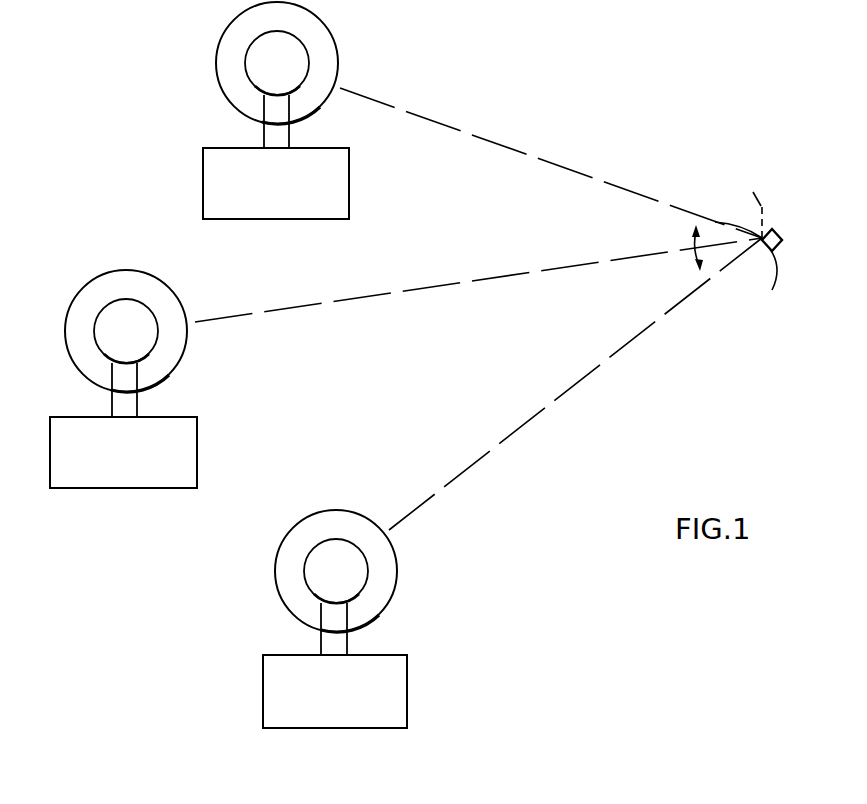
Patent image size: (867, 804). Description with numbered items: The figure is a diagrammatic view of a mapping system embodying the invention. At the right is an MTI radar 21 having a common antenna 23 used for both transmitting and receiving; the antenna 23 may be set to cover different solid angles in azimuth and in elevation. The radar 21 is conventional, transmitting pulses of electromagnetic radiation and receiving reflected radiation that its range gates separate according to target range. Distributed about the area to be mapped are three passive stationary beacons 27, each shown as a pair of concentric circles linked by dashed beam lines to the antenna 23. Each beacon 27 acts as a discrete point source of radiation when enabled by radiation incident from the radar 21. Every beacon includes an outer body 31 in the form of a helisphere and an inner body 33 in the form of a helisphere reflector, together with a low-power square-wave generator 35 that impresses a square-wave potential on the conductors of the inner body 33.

The MTI radar 21 is at (814, 248).
The common antenna 23 is at (761, 206).
The passive stationary beacon 27 is at (198, 70).
The outer body 31 is at (331, 35).
The inner body 33 is at (309, 63).
The square-wave generator 35 is at (349, 168).